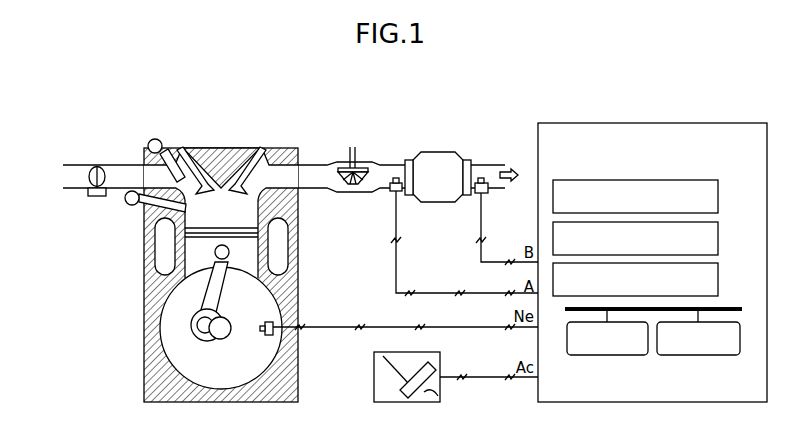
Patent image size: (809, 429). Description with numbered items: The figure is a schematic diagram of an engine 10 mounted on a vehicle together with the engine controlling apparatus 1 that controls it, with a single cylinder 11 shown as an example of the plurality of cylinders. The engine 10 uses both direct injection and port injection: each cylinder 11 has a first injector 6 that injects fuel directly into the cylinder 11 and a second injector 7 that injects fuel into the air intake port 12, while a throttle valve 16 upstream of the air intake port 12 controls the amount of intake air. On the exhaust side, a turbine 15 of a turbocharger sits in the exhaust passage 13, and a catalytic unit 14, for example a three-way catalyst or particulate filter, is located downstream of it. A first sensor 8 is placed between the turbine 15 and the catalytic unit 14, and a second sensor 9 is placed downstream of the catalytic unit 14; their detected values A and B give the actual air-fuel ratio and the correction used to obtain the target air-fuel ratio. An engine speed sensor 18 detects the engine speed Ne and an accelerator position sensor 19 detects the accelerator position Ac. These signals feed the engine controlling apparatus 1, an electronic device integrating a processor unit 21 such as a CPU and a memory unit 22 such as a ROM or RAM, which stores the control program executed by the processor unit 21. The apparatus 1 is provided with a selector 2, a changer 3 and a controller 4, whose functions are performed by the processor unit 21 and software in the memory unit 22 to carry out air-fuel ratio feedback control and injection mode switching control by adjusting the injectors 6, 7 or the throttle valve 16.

The engine controlling apparatus 1 is at (652, 243).
The selector 2 is at (720, 197).
The changer 3 is at (720, 239).
The controller 4 is at (720, 280).
The first injector 6 is at (137, 206).
The second injector 7 is at (162, 143).
The first sensor 8 is at (394, 193).
The second sensor 9 is at (478, 193).
The engine 10 is at (221, 244).
The cylinder 11 is at (232, 222).
The air intake port 12 is at (170, 184).
The exhaust passage 13 is at (328, 164).
The catalytic unit 14 is at (441, 151).
The turbine 15 is at (352, 182).
The throttle valve 16 is at (85, 174).
The engine speed sensor 18 is at (278, 336).
The accelerator position sensor 19 is at (374, 380).
The processor unit 21 is at (608, 357).
The memory unit 22 is at (699, 357).